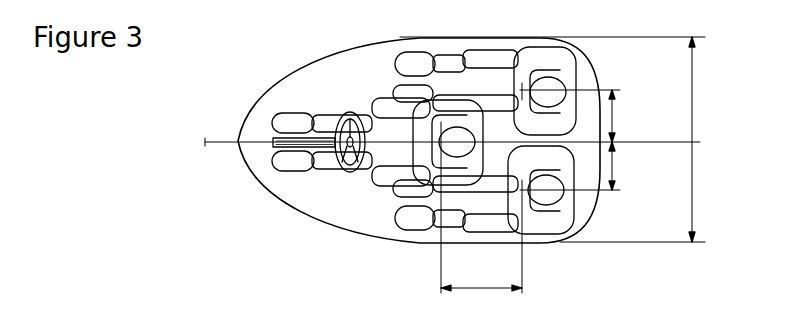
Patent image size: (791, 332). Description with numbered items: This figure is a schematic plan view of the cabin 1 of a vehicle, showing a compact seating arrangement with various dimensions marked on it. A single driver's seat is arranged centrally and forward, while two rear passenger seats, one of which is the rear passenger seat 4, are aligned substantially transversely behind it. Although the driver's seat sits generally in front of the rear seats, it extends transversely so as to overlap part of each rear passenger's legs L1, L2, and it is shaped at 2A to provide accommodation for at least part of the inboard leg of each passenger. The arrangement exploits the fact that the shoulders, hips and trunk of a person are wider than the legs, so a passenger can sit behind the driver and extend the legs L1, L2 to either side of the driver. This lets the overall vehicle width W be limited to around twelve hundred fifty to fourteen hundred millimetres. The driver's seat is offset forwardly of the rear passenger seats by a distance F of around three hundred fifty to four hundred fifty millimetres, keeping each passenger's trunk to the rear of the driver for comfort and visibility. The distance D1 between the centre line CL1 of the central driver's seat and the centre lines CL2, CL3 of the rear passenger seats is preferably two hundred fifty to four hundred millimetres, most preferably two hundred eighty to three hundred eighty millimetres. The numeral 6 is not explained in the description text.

The cabin 1 is at (282, 213).
The steering wheel and steering bar 6 is at (298, 86).
The shaped portion of driver's seat 2A is at (377, 93).
The rear passenger seat 4 is at (484, 67).
The centre line of driver's seat CL1 is at (439, 145).
The centre line of rear passenger seat CL2 is at (602, 198).
The centre line of rear passenger seat CL3 is at (604, 86).
The distance between centre lines D1 is at (626, 140).
The vehicle width W is at (559, 139).
The forward offset distance F is at (481, 221).
The rear passenger legs L1 is at (497, 177).
The rear passenger legs L2 is at (494, 108).